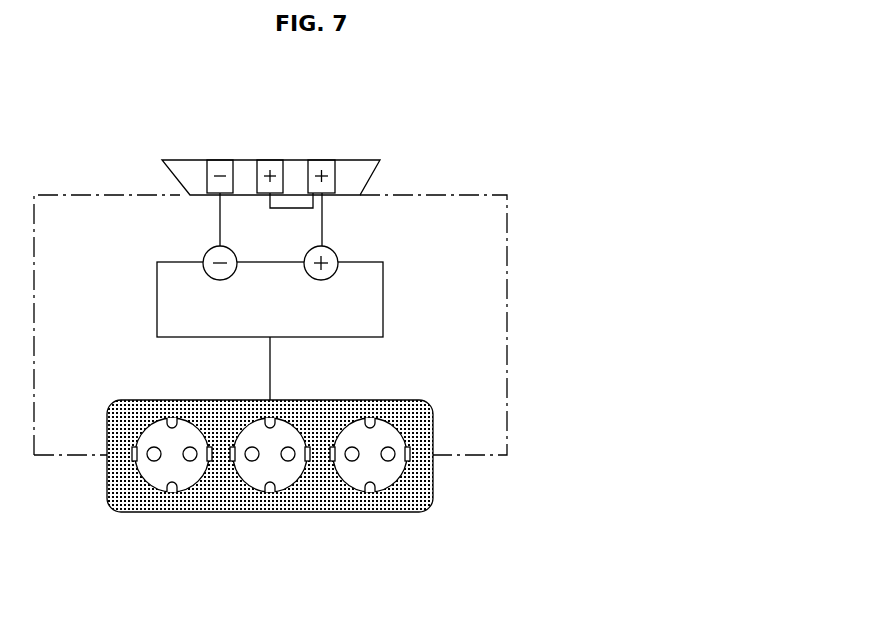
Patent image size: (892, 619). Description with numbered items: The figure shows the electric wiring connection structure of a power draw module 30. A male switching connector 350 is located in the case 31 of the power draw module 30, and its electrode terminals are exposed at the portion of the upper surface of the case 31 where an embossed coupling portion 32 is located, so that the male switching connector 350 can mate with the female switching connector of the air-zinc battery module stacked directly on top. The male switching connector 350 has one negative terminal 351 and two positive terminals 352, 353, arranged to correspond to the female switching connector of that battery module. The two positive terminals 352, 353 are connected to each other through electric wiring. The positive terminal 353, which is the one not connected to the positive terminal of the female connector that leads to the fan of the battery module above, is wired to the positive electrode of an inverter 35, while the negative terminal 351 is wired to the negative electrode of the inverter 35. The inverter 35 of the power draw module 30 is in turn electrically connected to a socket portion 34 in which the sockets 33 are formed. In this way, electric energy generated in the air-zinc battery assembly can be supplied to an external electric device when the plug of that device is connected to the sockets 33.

The power draw module 30 is at (558, 100).
The case 31 is at (507, 292).
The embossed coupling portion 32 is at (367, 160).
The sockets 33 is at (182, 477).
The socket portion 34 is at (273, 475).
The inverter 35 is at (383, 292).
The male switching connector 350 is at (226, 145).
The negative terminal 351 is at (207, 160).
The positive terminal 352 is at (262, 160).
The positive terminal 353 is at (323, 160).